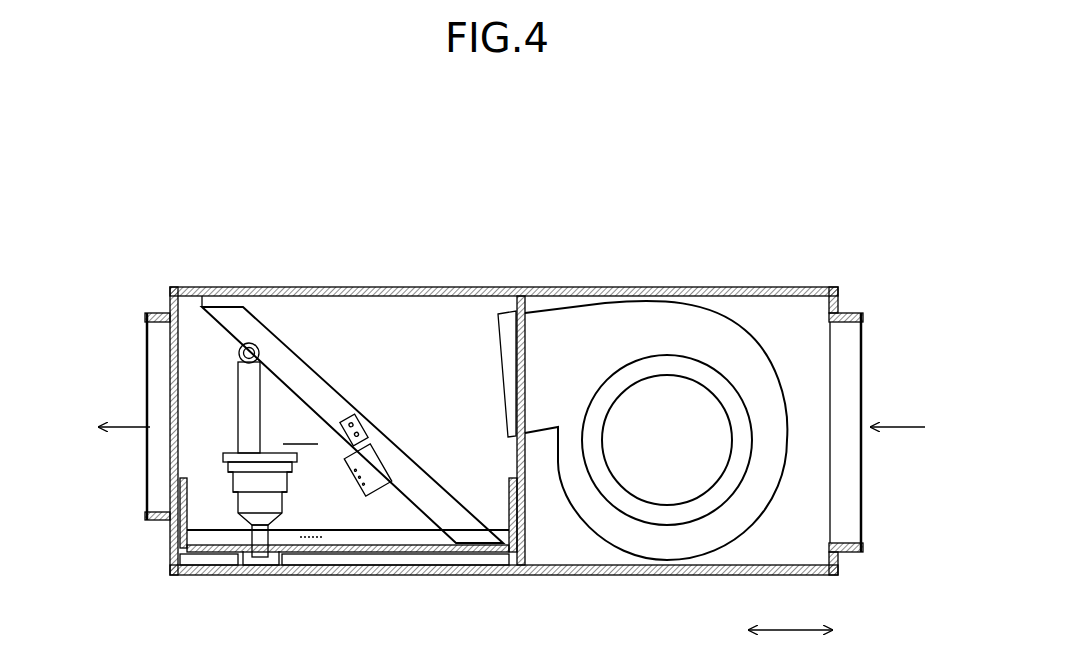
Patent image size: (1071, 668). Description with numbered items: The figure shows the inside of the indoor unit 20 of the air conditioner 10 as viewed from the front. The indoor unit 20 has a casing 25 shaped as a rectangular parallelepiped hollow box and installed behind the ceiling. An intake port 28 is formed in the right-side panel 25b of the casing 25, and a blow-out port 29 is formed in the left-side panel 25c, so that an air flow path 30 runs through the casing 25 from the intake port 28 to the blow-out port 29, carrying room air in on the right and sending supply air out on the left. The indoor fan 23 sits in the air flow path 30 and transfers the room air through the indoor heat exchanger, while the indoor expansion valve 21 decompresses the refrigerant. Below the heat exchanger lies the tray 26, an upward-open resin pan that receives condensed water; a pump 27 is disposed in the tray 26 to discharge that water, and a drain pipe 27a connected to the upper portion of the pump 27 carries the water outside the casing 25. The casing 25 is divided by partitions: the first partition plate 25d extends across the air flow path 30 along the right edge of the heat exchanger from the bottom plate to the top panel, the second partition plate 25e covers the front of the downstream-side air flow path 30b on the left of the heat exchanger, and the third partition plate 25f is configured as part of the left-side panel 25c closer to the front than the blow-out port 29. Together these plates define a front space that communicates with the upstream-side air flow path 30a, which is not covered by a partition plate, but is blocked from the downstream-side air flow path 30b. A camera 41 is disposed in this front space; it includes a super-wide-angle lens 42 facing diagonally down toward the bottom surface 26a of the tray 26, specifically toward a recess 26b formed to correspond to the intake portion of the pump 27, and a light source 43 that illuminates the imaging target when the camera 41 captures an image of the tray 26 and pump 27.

The air conditioner 10 is at (505, 404).
The indoor unit 20 is at (502, 427).
The indoor expansion valve 21 is at (323, 372).
The indoor fan 23 is at (679, 391).
The casing 25 is at (498, 426).
The right-side panel 25b is at (838, 305).
The left-side panel 25c is at (170, 303).
The first partition plate 25d is at (527, 505).
The second partition plate 25e is at (197, 452).
The third partition plate 25f is at (172, 396).
The tray 26 is at (348, 561).
The bottom surface 26a is at (367, 552).
The recess 26b is at (272, 553).
The pump 27 is at (241, 432).
The drain pipe 27a is at (237, 372).
The intake port 28 is at (850, 356).
The blow-out port 29 is at (157, 358).
The air flow path 30 is at (787, 320).
The upstream-side air flow path 30a is at (435, 357).
The downstream-side air flow path 30b is at (222, 510).
The camera 41 is at (373, 460).
The lens 42 is at (355, 477).
The light source 43 is at (362, 493).